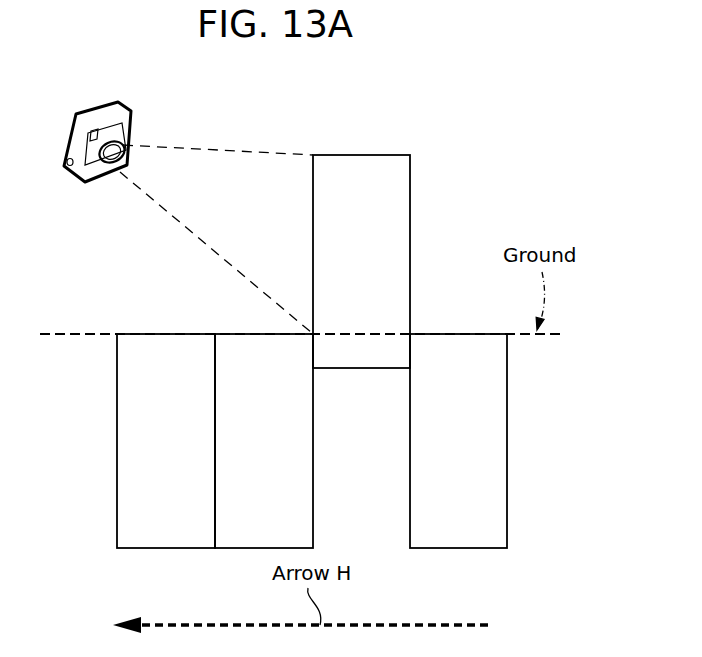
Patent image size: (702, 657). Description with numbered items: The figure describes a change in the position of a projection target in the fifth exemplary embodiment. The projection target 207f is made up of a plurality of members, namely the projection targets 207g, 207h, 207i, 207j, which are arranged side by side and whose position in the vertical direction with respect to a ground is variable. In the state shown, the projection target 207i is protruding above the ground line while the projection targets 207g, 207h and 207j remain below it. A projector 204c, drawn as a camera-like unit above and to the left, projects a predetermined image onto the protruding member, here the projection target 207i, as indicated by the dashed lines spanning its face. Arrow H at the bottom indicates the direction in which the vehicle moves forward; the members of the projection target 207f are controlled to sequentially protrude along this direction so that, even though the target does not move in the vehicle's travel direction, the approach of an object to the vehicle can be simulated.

The projector 204c is at (103, 115).
The projection target 207f is at (482, 212).
The projection target 207g is at (166, 441).
The projection target 207h is at (264, 441).
The projection target 207i is at (361, 261).
The projection target 207j is at (458, 441).